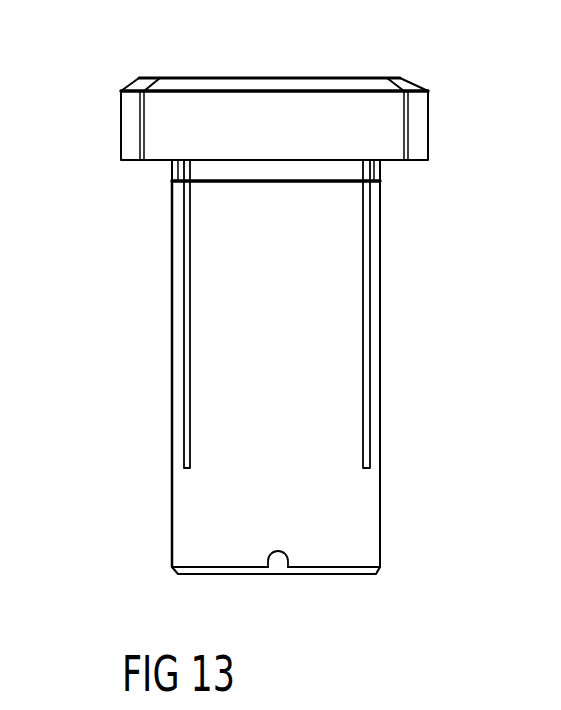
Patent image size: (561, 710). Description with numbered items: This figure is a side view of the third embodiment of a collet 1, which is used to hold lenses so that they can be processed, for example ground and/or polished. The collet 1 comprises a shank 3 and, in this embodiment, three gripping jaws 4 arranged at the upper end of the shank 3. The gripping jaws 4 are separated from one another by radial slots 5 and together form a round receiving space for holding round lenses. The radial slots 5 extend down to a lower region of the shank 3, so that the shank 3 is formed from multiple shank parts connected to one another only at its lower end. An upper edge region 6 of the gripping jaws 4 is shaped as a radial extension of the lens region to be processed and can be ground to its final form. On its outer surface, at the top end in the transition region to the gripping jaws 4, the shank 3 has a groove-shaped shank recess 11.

The collet 1 is at (111, 45).
The shank 3 is at (197, 498).
The gripping jaws 4 is at (131, 133).
The radial slots 5 is at (370, 348).
The upper edge region 6 is at (410, 83).
The shank recess 11 is at (170, 173).